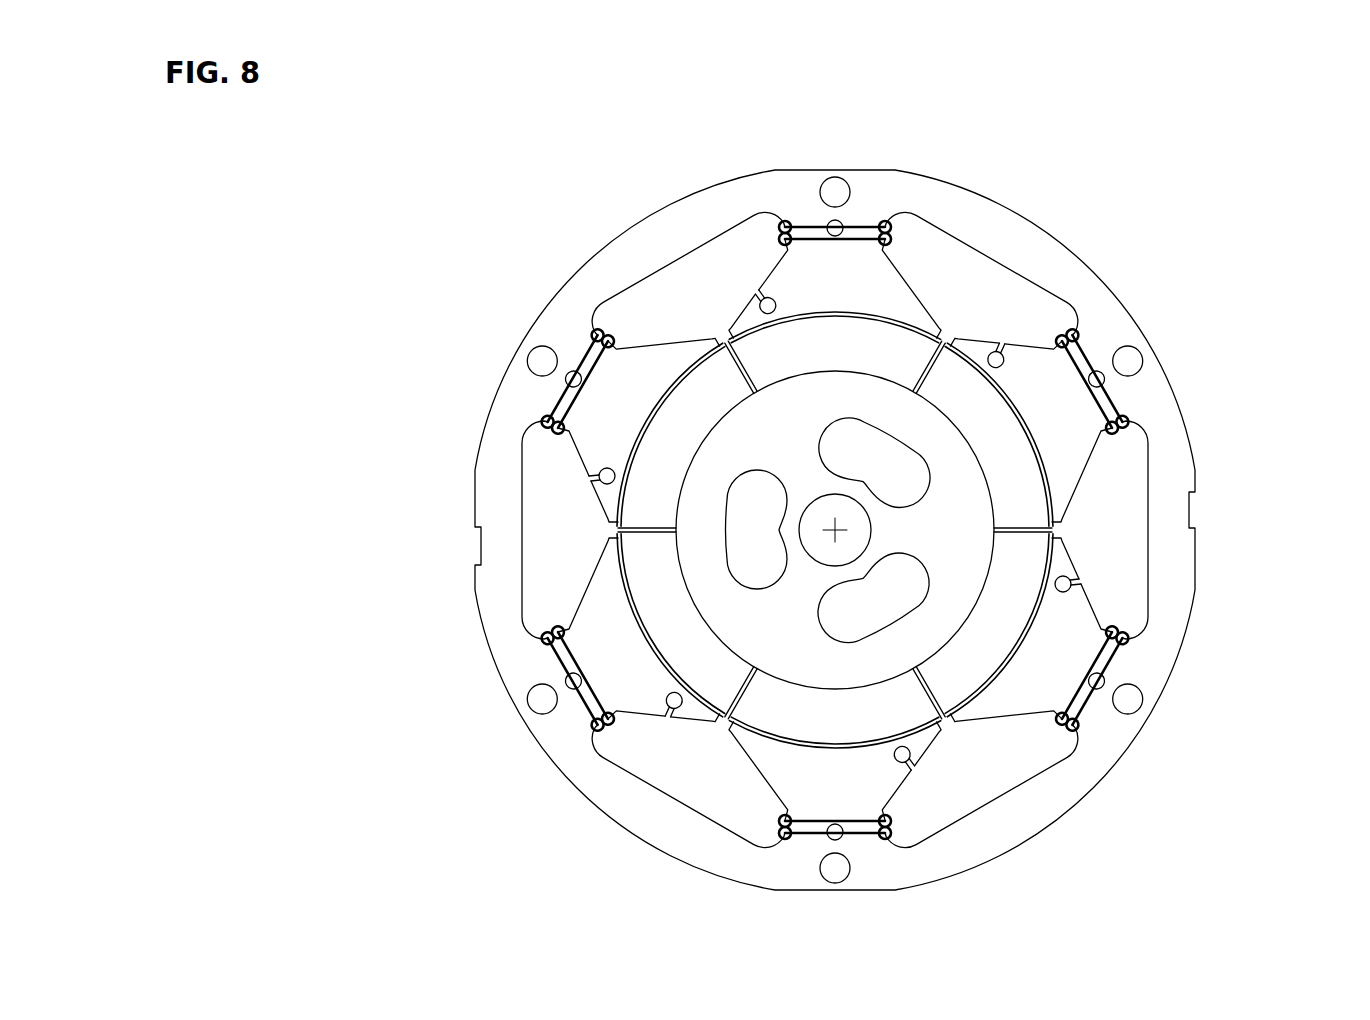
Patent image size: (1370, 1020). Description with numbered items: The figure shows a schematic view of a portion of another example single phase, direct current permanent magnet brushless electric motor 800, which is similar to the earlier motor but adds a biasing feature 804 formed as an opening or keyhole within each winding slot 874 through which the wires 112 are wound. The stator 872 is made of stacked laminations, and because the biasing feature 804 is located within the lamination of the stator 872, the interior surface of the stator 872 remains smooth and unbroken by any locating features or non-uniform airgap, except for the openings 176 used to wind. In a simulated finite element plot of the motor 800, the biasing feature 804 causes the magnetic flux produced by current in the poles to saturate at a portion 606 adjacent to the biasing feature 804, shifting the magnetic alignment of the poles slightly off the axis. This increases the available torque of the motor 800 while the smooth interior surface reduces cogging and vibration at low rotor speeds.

The electric motor 800 is at (1223, 181).
The stator 872 is at (613, 263).
The winding slot 874 is at (713, 262).
The openings used to wind 176 is at (724, 338).
The portion adjacent to the biasing feature 606 is at (784, 316).
The wire 112 is at (866, 226).
The biasing feature 804 is at (771, 302).